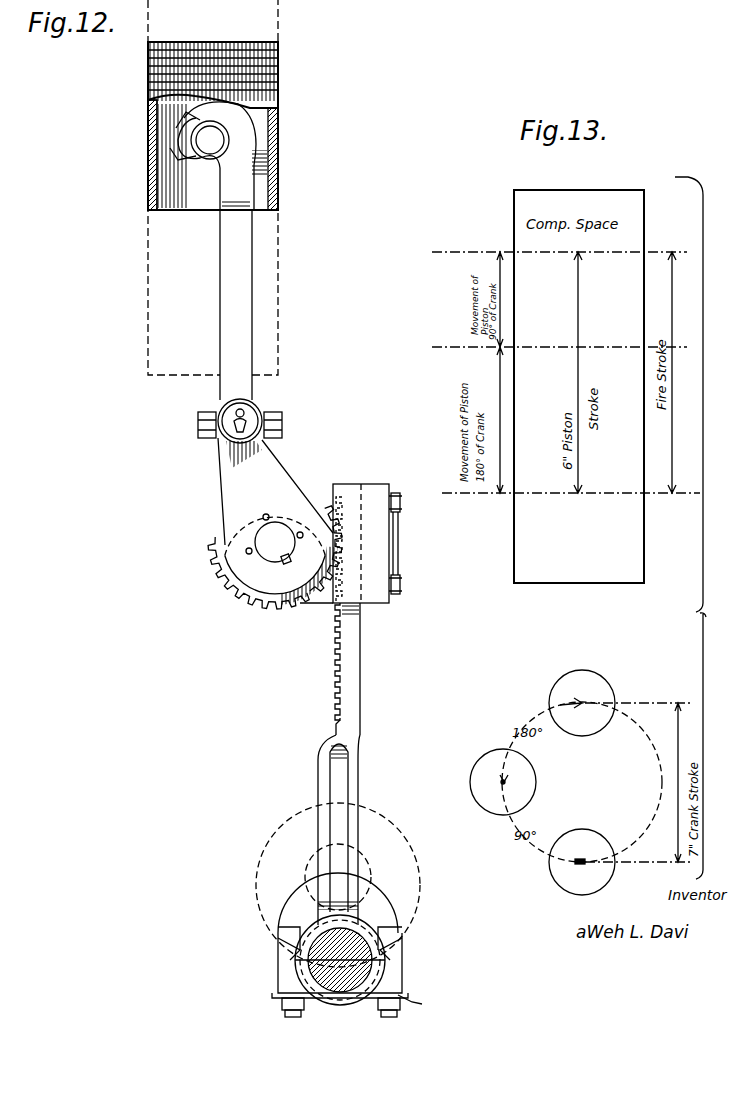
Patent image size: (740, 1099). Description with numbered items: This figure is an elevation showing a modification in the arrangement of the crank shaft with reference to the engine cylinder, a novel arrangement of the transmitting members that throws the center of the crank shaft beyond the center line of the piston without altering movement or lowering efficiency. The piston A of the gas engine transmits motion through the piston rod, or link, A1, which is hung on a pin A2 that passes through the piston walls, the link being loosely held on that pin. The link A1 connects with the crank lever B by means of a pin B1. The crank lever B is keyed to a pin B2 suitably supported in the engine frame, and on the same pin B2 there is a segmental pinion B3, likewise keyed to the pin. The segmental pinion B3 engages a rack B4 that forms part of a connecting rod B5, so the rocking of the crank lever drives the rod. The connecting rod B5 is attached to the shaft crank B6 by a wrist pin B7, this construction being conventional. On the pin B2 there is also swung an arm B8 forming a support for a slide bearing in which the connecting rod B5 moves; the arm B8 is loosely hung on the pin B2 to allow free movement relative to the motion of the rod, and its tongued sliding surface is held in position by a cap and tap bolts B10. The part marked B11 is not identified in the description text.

The piston A is at (280, 96).
The piston rod A1 is at (245, 237).
The pin A2 is at (148, 180).
The crank lever B is at (285, 470).
The pin B1 is at (222, 438).
The pin B2 is at (268, 542).
The segmental pinion B3 is at (218, 581).
The rack B4 is at (355, 647).
The connecting rod B5 is at (348, 755).
The shaft crank B6 is at (372, 872).
The wrist pin B7 is at (352, 970).
The arm B8 is at (372, 590).
The tap bolt B10 is at (420, 602).
The guide rod B11 is at (398, 545).